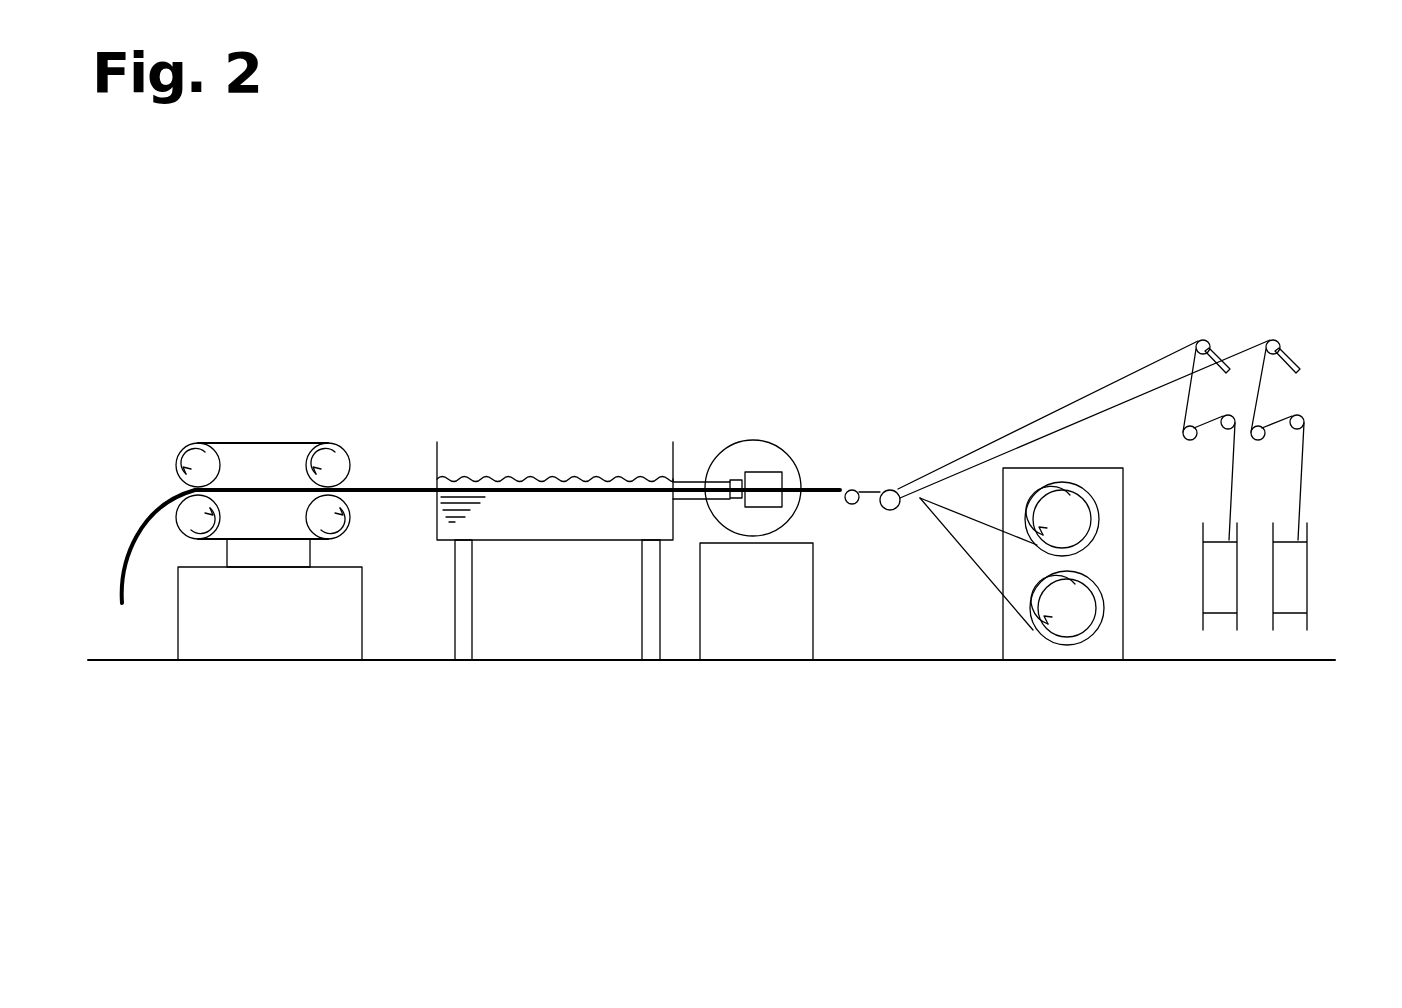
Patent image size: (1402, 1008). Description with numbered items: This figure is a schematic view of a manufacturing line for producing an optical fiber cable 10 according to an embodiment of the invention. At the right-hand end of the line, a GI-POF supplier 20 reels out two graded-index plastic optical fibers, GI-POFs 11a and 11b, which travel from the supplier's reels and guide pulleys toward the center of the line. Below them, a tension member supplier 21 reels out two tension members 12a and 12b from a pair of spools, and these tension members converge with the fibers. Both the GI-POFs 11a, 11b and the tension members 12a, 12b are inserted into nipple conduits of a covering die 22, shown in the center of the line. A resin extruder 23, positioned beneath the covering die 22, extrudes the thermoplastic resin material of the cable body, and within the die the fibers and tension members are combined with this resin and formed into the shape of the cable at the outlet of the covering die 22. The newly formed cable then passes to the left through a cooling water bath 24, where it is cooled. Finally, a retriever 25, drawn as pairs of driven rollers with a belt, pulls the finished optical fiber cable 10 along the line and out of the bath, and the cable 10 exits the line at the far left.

The optical fiber cable 10 is at (123, 592).
The GI-POF 11a is at (1062, 418).
The GI-POF 11b is at (1085, 419).
The tension member 12a is at (967, 518).
The tension member 12b is at (940, 698).
The GI-POF supplier 20 is at (1247, 321).
The tension member supplier 21 is at (1097, 661).
The covering die 22 is at (763, 469).
The resin extruder 23 is at (697, 525).
The cooling water bath 24 is at (558, 461).
The retriever 25 is at (270, 431).